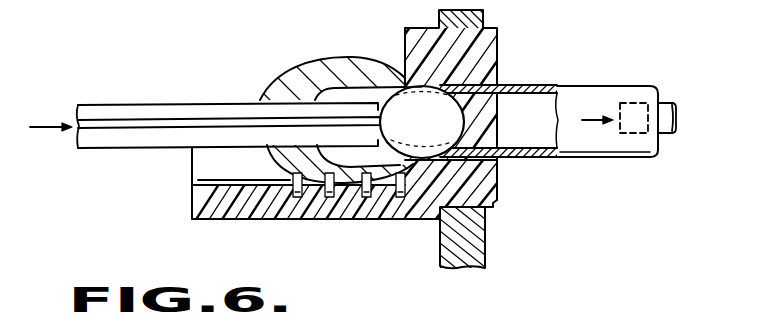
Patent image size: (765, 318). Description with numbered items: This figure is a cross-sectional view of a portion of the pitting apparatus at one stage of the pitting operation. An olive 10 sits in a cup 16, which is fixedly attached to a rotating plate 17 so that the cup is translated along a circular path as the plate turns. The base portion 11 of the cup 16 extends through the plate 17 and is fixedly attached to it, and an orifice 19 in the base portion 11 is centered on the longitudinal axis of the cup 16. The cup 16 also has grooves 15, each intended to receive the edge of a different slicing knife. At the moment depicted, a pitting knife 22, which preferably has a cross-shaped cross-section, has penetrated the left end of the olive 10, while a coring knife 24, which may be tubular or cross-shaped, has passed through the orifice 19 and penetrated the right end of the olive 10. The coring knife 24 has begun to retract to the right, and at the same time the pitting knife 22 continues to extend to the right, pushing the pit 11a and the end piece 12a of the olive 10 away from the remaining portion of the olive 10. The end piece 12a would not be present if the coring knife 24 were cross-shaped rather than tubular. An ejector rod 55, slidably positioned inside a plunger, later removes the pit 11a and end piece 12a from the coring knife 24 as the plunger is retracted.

The olive 10 is at (318, 58).
The base portion 11 is at (497, 197).
The pit 11a is at (422, 88).
The olive end piece 12a is at (505, 138).
The grooves 15 is at (400, 198).
The cup 16 is at (218, 222).
The plate 17 is at (487, 262).
The orifice 19 is at (495, 33).
The pitting knife 22 is at (160, 105).
The coring knife 24 is at (552, 85).
The ejector rod 55 is at (627, 88).